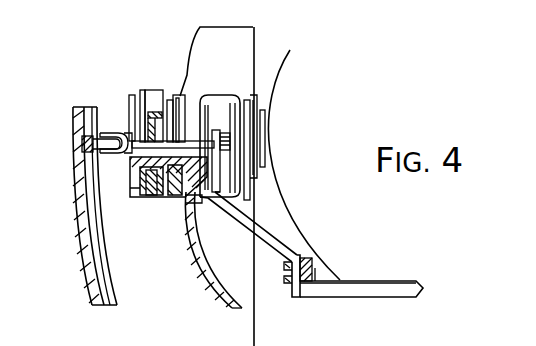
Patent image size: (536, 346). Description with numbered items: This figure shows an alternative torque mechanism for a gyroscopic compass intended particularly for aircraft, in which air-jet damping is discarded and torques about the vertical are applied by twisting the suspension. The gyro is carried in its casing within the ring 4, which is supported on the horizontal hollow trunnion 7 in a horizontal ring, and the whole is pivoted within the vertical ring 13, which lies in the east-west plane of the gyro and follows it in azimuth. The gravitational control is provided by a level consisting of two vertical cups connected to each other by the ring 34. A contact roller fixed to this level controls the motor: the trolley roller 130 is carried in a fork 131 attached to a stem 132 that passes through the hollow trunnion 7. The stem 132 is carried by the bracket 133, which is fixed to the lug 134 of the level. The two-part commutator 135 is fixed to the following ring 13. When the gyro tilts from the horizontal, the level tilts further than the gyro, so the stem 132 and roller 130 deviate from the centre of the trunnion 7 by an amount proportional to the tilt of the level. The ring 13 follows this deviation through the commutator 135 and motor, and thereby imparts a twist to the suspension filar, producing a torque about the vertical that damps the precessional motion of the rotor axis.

The ring 4 is at (195, 243).
The hollow trunnion 7 is at (172, 181).
The vertical ring 13 is at (73, 200).
The ring 34 is at (384, 292).
The trolley roller 130 is at (112, 152).
The fork 131 is at (119, 133).
The stem 132 is at (207, 136).
The bracket 133 is at (247, 219).
The lug 134 is at (303, 262).
The two-part commutator 135 is at (82, 143).